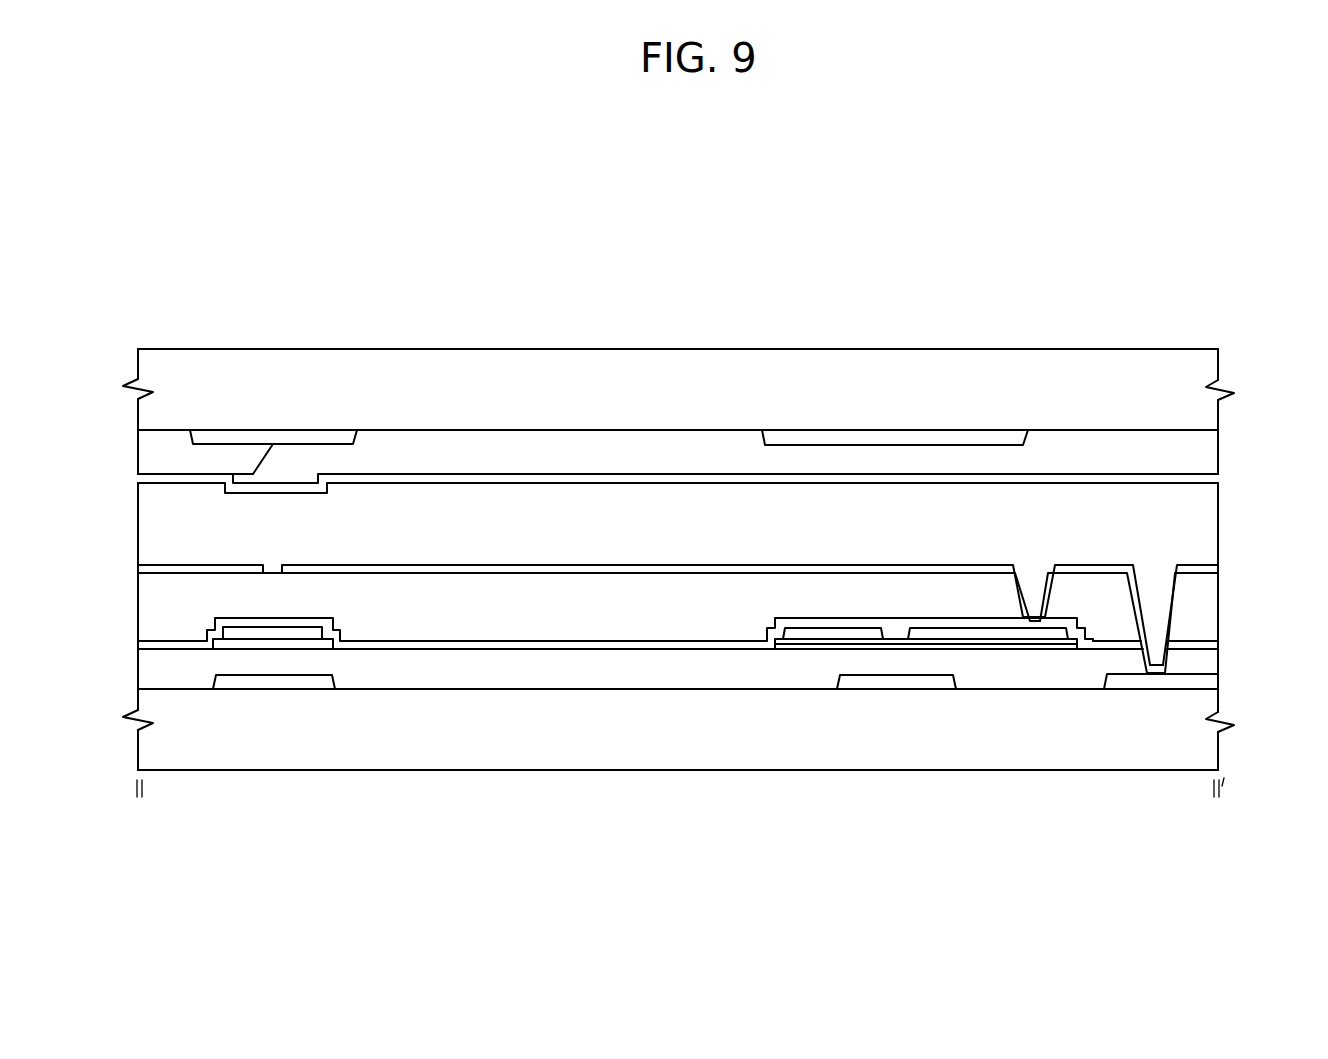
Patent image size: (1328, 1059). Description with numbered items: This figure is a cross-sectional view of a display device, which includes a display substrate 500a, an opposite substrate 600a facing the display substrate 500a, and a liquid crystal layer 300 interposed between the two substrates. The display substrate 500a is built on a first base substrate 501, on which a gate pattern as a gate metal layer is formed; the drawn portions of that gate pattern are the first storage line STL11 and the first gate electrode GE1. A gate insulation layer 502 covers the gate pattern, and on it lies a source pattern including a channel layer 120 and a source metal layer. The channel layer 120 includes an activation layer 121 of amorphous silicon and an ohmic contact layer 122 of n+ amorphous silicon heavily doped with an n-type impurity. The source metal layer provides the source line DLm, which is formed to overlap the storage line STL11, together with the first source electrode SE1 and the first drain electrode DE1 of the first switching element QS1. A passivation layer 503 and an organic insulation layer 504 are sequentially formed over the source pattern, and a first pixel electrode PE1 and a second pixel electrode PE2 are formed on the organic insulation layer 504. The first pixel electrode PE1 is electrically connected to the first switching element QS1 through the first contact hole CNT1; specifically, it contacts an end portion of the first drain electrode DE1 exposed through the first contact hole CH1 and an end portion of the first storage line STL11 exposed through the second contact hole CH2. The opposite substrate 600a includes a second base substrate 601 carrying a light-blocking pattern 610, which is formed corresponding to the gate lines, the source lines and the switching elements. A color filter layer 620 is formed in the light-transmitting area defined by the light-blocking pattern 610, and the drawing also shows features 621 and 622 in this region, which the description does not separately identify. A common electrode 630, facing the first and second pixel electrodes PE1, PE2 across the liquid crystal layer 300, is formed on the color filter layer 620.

The second base substrate 601 is at (1207, 405).
The color filter layer 620 is at (1207, 453).
The color filter 621 is at (568, 450).
The light blocking pattern 622 is at (175, 445).
The light-blocking pattern 610 is at (868, 440).
The common electrode 630 is at (1207, 480).
The opposite substrate 600a is at (122, 350).
The liquid crystal layer 300 is at (122, 483).
The display substrate 500a is at (122, 572).
The first pixel electrode PE1 is at (831, 564).
The second pixel electrode PE2 is at (192, 564).
The organic insulation layer 504 is at (1207, 609).
The passivation layer 503 is at (1207, 645).
The gate insulation layer 502 is at (1208, 666).
The first base substrate 501 is at (1207, 750).
The first contact hole CNT1 is at (1172, 525).
The first contact hole CH1 is at (1044, 593).
The second contact hole CH2 is at (1162, 593).
The first storage line STL11 is at (238, 682).
The source line DLm is at (253, 633).
The first source electrode SE1 is at (810, 637).
The first gate electrode GE1 is at (892, 683).
The first drain electrode DE1 is at (963, 637).
The activation layer 121 is at (1015, 651).
The ohmic contact layer 122 is at (1065, 645).
The channel layer 120 is at (1085, 850).
The first switching element QS1 is at (980, 850).